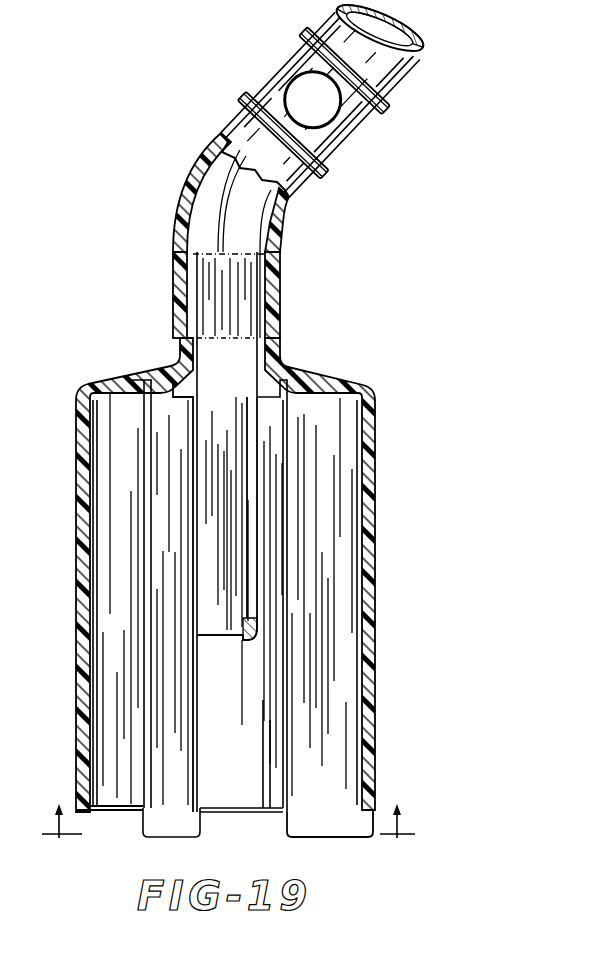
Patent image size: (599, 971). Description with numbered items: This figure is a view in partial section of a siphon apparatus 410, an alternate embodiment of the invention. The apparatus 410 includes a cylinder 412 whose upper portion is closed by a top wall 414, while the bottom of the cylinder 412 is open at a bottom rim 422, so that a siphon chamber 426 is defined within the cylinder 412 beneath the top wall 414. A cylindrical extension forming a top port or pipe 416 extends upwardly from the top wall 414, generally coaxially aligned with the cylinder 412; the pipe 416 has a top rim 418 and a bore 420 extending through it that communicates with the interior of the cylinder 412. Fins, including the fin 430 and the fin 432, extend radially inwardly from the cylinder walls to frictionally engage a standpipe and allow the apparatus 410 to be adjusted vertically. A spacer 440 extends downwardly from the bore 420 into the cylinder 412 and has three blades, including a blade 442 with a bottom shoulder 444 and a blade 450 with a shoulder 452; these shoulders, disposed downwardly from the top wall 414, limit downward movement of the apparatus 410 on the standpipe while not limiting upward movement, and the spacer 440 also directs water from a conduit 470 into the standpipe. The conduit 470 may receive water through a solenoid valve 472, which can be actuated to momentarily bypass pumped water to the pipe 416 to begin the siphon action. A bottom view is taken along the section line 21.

The siphon apparatus 410 is at (333, 292).
The cylinder 412 is at (77, 450).
The top wall 414 is at (345, 380).
The cylindrical extension (top port or pipe) 416 is at (173, 292).
The top rim 418 is at (262, 243).
The bore 420 is at (185, 248).
The bottom rim 422 is at (80, 815).
The siphon chamber 426 is at (342, 551).
The fin 430 is at (293, 820).
The fin 432 is at (190, 763).
The spacer 440 is at (260, 491).
The blade 442 is at (255, 612).
The shoulder 444 is at (273, 398).
The blade 450 is at (203, 522).
The shoulder 452 is at (177, 412).
The conduit 470 is at (228, 128).
The solenoid valve 472 is at (277, 97).
The section line 21— 21 is at (228, 838).